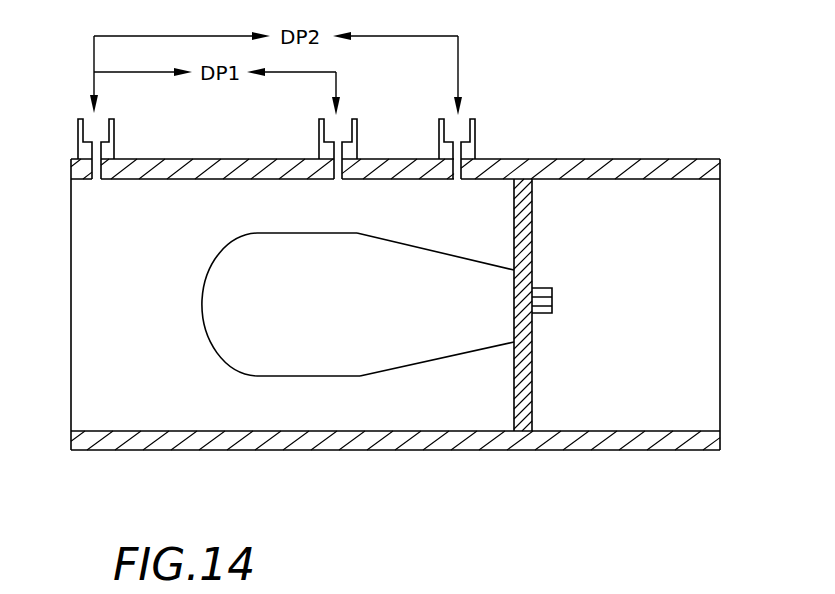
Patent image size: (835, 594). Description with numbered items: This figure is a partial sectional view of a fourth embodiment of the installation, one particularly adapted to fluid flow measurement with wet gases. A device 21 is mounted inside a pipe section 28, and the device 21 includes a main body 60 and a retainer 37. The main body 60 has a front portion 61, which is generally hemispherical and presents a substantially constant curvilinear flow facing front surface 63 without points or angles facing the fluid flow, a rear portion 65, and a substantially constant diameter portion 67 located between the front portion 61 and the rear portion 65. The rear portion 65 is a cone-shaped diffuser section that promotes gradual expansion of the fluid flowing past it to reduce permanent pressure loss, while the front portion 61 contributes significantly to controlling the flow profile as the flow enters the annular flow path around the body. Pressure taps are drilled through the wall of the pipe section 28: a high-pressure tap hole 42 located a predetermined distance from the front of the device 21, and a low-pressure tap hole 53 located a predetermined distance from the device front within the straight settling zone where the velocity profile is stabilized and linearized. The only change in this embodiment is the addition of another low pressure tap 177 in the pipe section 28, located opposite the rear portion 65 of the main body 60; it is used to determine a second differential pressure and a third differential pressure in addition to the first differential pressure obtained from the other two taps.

The device 21 is at (373, 248).
The pipe section 28 is at (380, 442).
The retainer 37 is at (527, 383).
The hole 42 is at (96, 150).
The hole 53 is at (337, 150).
The low pressure tap 177 is at (457, 148).
The main body 60 is at (310, 345).
The front portion 61 is at (232, 327).
The flow facing front surface 63 is at (200, 305).
The rear portion 65 is at (443, 327).
The substantially constant diameter portion 67 is at (354, 250).